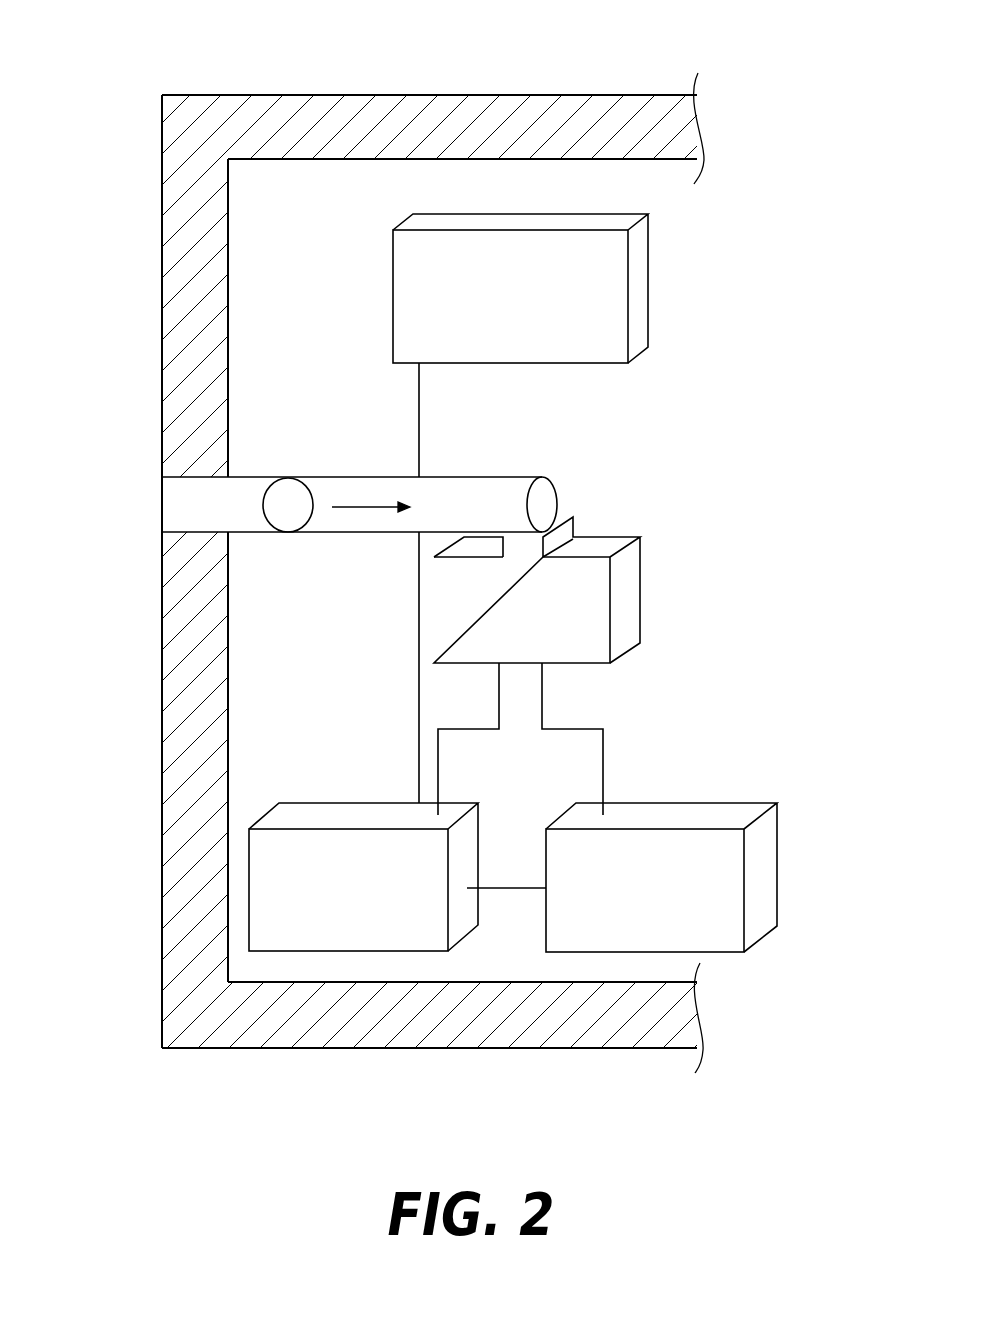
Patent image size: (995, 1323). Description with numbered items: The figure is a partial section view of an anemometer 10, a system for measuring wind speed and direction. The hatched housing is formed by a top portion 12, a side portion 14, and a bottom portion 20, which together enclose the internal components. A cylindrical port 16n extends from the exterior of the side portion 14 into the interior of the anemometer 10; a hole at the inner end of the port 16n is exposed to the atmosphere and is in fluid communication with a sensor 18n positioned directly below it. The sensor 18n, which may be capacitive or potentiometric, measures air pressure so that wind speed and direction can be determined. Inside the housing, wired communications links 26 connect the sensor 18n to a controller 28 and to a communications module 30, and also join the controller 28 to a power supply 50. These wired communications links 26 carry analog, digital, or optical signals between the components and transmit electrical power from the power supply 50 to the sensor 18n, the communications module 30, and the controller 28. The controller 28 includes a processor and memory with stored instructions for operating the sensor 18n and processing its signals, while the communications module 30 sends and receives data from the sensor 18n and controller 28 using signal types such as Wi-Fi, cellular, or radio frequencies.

The anemometer system 10 is at (768, 264).
The top portion 12 is at (428, 96).
The side portion 14 is at (166, 293).
The port 16n is at (205, 498).
The sensor 18n is at (592, 664).
The bottom portion 20 is at (365, 1049).
The wired communications link 26 is at (419, 424).
The controller 28 is at (250, 933).
The communications module 30 is at (643, 320).
The power supply 50 is at (777, 868).